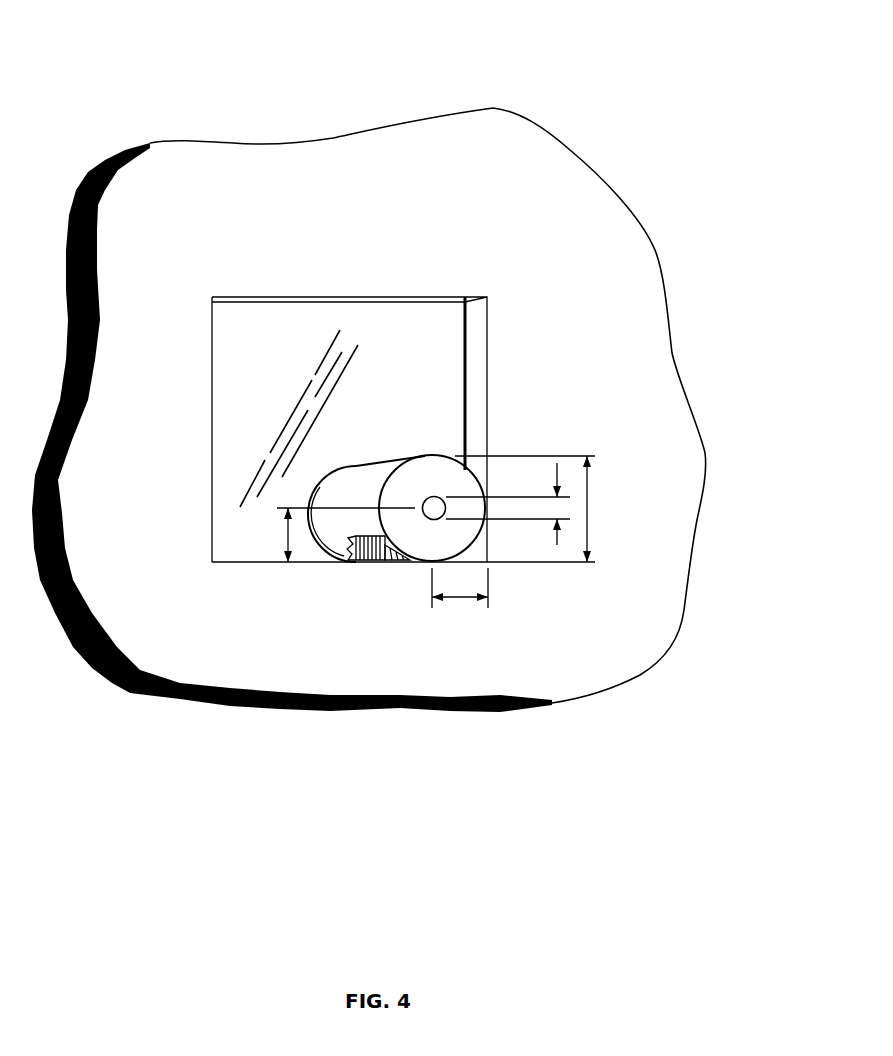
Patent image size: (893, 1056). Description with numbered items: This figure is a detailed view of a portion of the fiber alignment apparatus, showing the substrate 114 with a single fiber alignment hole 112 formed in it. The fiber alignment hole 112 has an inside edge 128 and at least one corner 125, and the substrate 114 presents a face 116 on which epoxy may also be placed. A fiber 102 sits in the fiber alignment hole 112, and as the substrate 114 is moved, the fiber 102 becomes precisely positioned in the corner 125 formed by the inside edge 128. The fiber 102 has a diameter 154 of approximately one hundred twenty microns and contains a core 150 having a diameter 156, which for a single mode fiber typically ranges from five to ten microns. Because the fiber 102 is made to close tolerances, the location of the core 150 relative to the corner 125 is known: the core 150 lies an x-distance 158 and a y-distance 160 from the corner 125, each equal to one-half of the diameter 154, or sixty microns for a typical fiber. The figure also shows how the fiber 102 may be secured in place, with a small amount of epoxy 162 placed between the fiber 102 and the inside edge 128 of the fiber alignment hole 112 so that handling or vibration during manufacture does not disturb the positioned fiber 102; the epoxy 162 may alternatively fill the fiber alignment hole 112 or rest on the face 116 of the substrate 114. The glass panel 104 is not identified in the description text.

The substrate 114 is at (492, 108).
The face 116 is at (540, 165).
The fiber alignment hole 112 is at (465, 297).
The inside edge 128 is at (477, 358).
The fiber 102 is at (433, 497).
The core 150 is at (443, 460).
The diameter 154 is at (583, 510).
The glass panel 104 is at (245, 528).
The x-distance 158 is at (288, 563).
The epoxy 162 is at (390, 563).
The y-distance 160 is at (462, 606).
The corner 125 is at (490, 563).
The diameter 156 is at (557, 545).